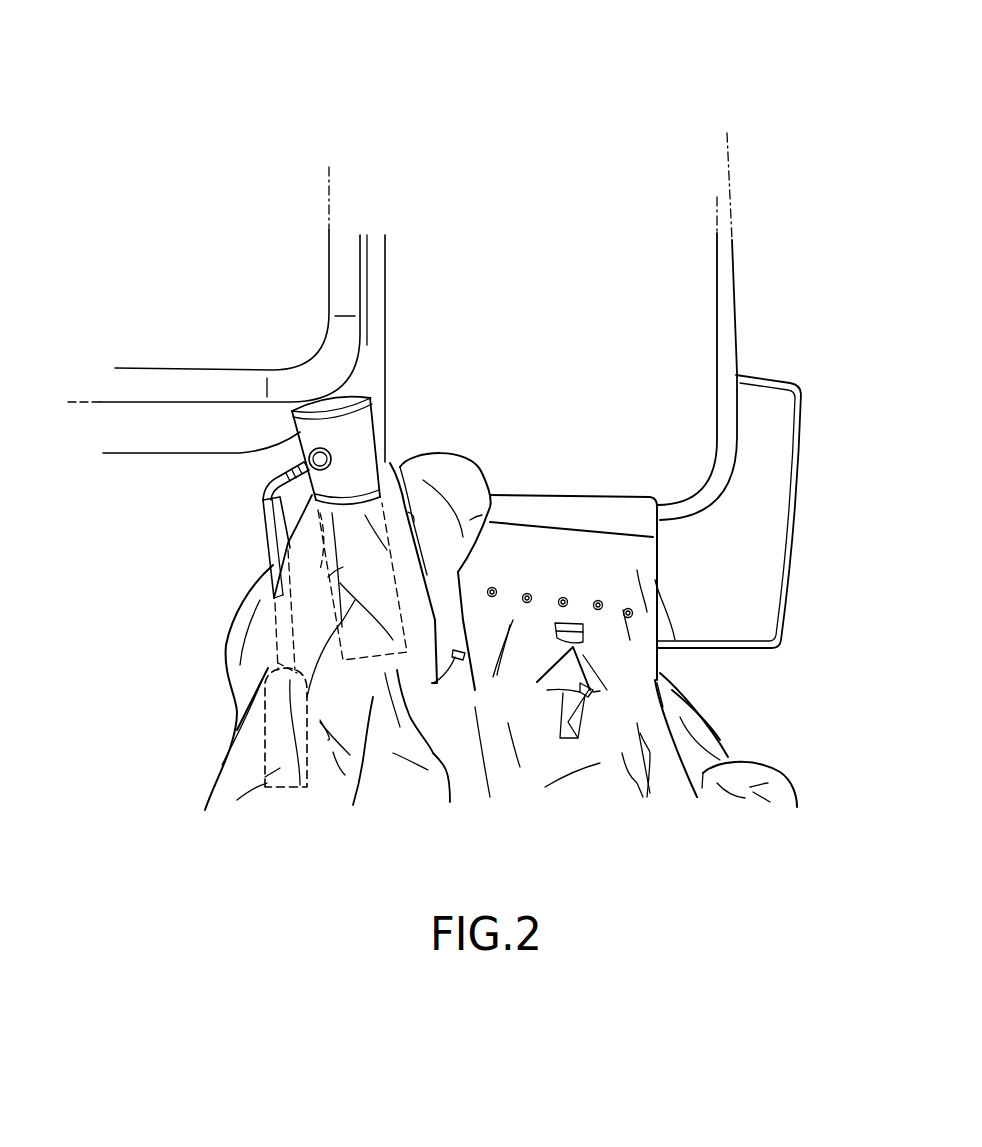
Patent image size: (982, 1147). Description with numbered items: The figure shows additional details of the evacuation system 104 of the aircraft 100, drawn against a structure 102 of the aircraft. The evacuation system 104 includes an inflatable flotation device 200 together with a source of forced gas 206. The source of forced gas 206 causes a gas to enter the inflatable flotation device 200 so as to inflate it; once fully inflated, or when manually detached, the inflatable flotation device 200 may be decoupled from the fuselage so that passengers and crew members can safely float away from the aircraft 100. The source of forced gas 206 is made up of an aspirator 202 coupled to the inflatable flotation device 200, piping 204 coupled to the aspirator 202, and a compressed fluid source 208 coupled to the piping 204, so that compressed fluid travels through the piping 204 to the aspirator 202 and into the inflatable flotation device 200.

The aircraft 100 is at (517, 40).
The seat back / pillar 102 is at (733, 252).
The evacuation system 104 is at (110, 590).
The inflatable flotation device 200 is at (467, 780).
The aspirator 202 is at (365, 443).
The piping 204 is at (263, 522).
The source of forced gas 206 is at (318, 342).
The compressed fluid source 208 is at (272, 790).